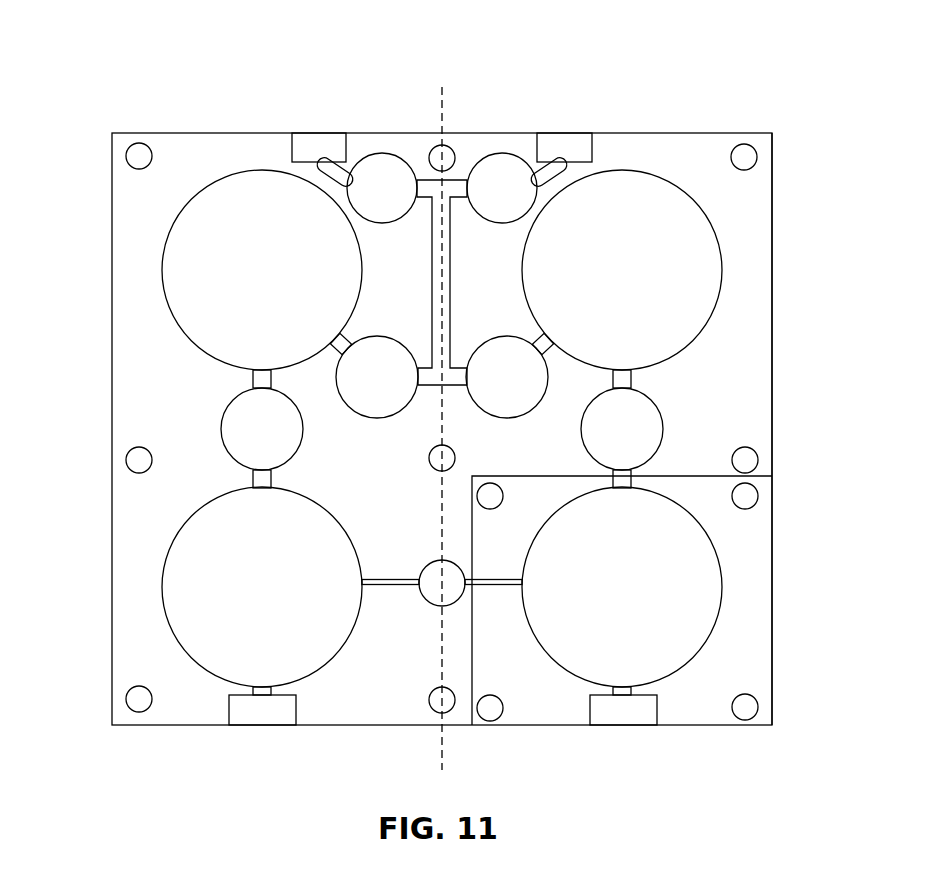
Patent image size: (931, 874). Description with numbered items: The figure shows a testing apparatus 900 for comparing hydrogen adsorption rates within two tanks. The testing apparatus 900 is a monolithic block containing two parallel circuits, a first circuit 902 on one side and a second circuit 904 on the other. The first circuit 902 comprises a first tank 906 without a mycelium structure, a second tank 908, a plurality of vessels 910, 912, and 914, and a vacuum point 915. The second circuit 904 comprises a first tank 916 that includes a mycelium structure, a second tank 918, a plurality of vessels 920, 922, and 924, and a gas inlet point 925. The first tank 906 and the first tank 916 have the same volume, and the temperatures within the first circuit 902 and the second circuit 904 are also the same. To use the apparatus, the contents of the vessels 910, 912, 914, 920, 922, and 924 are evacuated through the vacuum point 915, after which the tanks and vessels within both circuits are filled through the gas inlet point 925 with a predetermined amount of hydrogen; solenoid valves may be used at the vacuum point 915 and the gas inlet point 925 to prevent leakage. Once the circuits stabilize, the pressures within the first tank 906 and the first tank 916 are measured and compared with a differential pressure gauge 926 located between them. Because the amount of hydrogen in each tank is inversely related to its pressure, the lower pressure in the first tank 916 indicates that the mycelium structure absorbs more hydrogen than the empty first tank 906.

The testing apparatus 900 is at (780, 112).
The first circuit 902 is at (112, 186).
The second circuit 904 is at (772, 193).
The first tank 906 is at (161, 569).
The second tank 908 is at (228, 175).
The vessel 910 is at (382, 153).
The vessel 912 is at (370, 418).
The vessel 914 is at (226, 409).
The vacuum point 915 is at (318, 133).
The first tank 916 is at (722, 597).
The second tank 918 is at (663, 177).
The vessel 920 is at (503, 153).
The vessel 922 is at (500, 337).
The vessel 924 is at (663, 420).
The gas inlet point 925 is at (563, 133).
The differential pressure gauge 926 is at (428, 602).